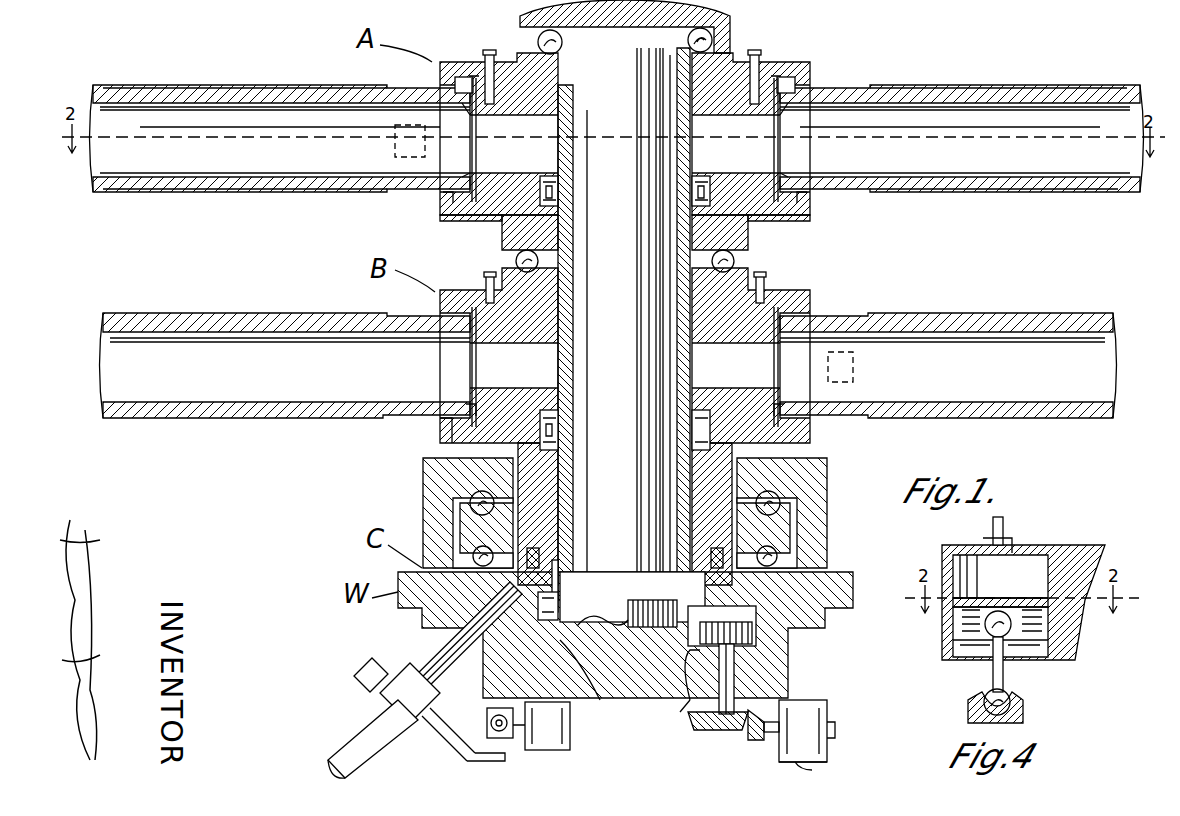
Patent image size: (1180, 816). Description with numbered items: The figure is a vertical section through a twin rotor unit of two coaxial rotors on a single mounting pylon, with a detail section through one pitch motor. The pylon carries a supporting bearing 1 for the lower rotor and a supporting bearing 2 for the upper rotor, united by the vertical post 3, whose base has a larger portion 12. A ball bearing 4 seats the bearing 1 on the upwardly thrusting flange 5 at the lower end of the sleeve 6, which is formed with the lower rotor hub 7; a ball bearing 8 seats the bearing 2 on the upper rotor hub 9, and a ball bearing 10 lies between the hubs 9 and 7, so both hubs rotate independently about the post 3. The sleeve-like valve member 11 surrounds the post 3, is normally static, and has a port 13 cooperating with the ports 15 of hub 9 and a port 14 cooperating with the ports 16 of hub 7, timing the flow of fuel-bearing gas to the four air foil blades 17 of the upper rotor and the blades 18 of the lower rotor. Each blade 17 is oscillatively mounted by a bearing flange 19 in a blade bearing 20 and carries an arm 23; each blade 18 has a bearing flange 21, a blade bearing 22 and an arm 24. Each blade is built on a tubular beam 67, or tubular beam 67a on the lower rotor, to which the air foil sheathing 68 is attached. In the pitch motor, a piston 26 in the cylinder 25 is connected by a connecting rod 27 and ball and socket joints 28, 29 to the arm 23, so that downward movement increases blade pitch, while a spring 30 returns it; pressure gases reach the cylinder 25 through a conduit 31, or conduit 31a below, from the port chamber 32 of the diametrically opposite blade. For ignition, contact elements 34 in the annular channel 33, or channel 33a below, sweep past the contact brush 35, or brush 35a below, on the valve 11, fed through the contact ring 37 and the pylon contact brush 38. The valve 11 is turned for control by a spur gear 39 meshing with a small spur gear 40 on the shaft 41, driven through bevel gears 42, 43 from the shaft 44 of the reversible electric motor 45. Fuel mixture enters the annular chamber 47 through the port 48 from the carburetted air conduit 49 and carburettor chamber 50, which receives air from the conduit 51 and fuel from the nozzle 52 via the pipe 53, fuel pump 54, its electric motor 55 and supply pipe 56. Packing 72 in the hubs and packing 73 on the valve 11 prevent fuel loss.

In FIG. 1, the supporting bearing 1 is at (470, 469).
In FIG. 1, the supporting bearing 2 is at (528, 14).
In FIG. 1, the vertical post 3 is at (618, 252).
In FIG. 1, the ball bearing 4 is at (760, 500).
In FIG. 1, the upwardly thrusting disk or flange 5 is at (478, 547).
In FIG. 1, the sleeve 6 is at (560, 474).
In FIG. 1, the lower rotor hub 7 is at (522, 418).
In FIG. 1, the ball bearing 8 is at (710, 36).
In FIG. 1, the upper rotor hub 9 is at (522, 58).
In FIG. 1, the ball bearing 10 is at (516, 260).
In FIG. 1, the common valve member 11 is at (680, 292).
In FIG. 1, the larger portion of post 12 is at (624, 606).
In FIG. 1, the port 13 is at (690, 146).
In FIG. 1, the port 14 is at (566, 374).
In FIG. 1, the ports 15 is at (545, 122).
In FIG. 1, the ports 16 is at (544, 352).
In FIG. 1, the air foil blades 17 is at (165, 82).
In FIG. 1, the air foil blades 18 is at (140, 312).
In FIG. 1, the bearing flanges 19 is at (465, 180).
In FIG. 1, the blade bearing 20 is at (440, 210).
In FIG. 1, the bearing flanges 21 is at (460, 396).
In FIG. 1, the blade bearing 22 is at (438, 432).
In FIG. 1, the arm 23 is at (396, 153).
In FIG. 4, the arm 23 is at (1025, 714).
In FIG. 1, the arm 24 is at (855, 356).
In FIG. 4, the pitch motor cylinder 25 is at (1030, 560).
In FIG. 4, the reciprocable piston 26 is at (1005, 598).
In FIG. 4, the connecting rod 27 is at (1006, 680).
In FIG. 4, the ball and socket joint 28 is at (990, 640).
In FIG. 4, the ball and socket joint 29 is at (972, 712).
In FIG. 4, the spring 30 is at (1050, 645).
In FIG. 1, the conduit 31 is at (762, 50).
In FIG. 1, the conduit 31a is at (484, 269).
In FIG. 1, the port chamber 32 is at (470, 149).
In FIG. 1, the annular channel 33 is at (548, 182).
In FIG. 1, the annular channel 33a is at (548, 420).
In FIG. 1, the contact elements 34 is at (552, 194).
In FIG. 1, the contact brush 35 is at (700, 195).
In FIG. 1, the contact brush 35a is at (552, 432).
In FIG. 1, the contact ring 37 is at (700, 655).
In FIG. 1, the contact brush 38 is at (604, 700).
In FIG. 1, the spur gear 39 is at (482, 52).
In FIG. 1, the small spur gear 40 is at (755, 641).
In FIG. 1, the shaft 41 is at (735, 671).
In FIG. 1, the bevel gear 42 is at (700, 732).
In FIG. 1, the bevel gear 43 is at (750, 738).
In FIG. 1, the shaft 44 is at (838, 728).
In FIG. 1, the electric motor 45 is at (830, 768).
In FIG. 1, the annular chamber 47 is at (750, 238).
In FIG. 1, the port 48 is at (560, 610).
In FIG. 1, the carburetted air conduit 49 is at (440, 650).
In FIG. 1, the carburettor chamber 50 is at (372, 674).
In FIG. 1, the conduit 51 is at (368, 730).
In FIG. 1, the nozzle 52 is at (410, 693).
In FIG. 1, the pipe 53 is at (458, 745).
In FIG. 1, the fuel pump 54 is at (508, 740).
In FIG. 1, the electric motor 55 is at (572, 746).
In FIG. 1, the supply pipe 56 is at (472, 760).
In FIG. 1, the tubular beam 67 is at (140, 172).
In FIG. 1, the tubular beam 67a is at (178, 400).
In FIG. 1, the air foil sheathing 68 is at (228, 84).
In FIG. 1, the packing 72 is at (566, 612).
In FIG. 1, the packing 73 is at (583, 97).